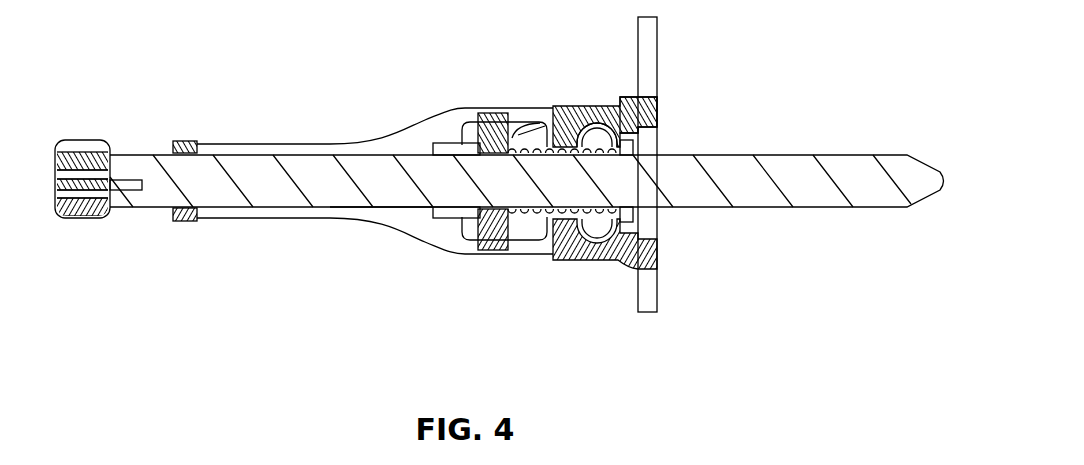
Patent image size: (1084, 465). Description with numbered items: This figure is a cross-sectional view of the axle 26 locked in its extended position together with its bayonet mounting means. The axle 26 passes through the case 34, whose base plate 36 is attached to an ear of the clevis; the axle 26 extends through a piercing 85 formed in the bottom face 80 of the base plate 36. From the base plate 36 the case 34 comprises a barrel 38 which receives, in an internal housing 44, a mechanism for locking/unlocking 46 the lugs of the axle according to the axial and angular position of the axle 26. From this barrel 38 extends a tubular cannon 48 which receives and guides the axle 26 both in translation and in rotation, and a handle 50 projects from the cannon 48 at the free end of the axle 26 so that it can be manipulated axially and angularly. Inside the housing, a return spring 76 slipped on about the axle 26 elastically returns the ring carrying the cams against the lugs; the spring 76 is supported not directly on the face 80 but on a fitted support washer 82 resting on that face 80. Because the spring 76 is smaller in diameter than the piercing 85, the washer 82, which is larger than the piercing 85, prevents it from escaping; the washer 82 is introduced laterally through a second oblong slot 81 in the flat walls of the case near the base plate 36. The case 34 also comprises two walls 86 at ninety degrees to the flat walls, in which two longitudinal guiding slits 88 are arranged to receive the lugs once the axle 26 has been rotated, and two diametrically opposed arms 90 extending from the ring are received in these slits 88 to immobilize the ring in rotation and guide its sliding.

The axle 26 is at (905, 208).
The case 34 is at (403, 131).
The base plate 36 is at (648, 303).
The barrel 38 is at (473, 106).
The internal housing 44 is at (548, 112).
The mechanism for locking/unlocking 46 is at (463, 208).
The tubular cannon 48 is at (272, 220).
The handle 50 is at (82, 138).
The return spring 76 is at (622, 133).
The face of the base plate 80 is at (627, 141).
The second oblong slot 81 is at (640, 247).
The support washer 82 is at (634, 149).
The piercing 85 is at (657, 209).
The walls of the case 86 is at (518, 110).
The longitudinal guiding slits 88 is at (412, 208).
The arms 90 is at (495, 120).